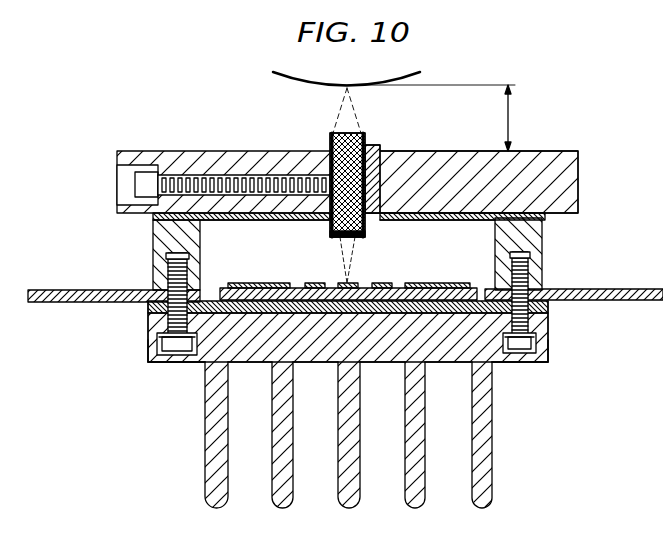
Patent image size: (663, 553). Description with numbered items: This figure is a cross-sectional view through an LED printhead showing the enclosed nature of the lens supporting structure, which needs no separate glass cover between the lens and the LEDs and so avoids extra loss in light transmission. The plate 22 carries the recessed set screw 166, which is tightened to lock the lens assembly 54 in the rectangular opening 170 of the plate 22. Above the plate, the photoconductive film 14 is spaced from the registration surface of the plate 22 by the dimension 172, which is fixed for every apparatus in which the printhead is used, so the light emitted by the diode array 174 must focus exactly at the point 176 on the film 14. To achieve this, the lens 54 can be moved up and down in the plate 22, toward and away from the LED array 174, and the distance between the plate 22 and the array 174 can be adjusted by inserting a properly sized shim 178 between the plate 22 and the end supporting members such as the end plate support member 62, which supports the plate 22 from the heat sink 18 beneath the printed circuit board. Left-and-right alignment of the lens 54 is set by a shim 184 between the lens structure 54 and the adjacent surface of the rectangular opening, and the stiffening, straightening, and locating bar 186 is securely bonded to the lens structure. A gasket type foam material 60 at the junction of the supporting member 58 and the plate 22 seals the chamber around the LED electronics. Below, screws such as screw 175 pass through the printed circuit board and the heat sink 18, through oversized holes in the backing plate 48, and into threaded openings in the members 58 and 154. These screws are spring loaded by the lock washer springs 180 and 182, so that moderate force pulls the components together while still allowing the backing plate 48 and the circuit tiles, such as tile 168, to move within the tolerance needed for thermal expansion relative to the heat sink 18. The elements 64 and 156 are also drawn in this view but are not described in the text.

The photoconductive film 14 is at (386, 75).
The heat sink 18 is at (494, 458).
The plate 22 is at (570, 182).
The backing plate 48 is at (316, 305).
The lens assembly 54 is at (362, 131).
The supporting member 58 is at (535, 262).
The gasket type foam material 60 is at (542, 232).
The end plate support member 62 is at (200, 246).
The base corner 64 is at (205, 362).
The supporting member 154 is at (162, 270).
The thin layer 156 is at (150, 217).
The recessed set screw 166 is at (140, 184).
The circuit tile 168 is at (398, 288).
The rectangular opening 170 is at (327, 150).
The dimension 172 is at (510, 120).
The diode array 174 is at (347, 282).
The screw 175 is at (520, 357).
The focal point 176 is at (345, 90).
The shim 178 is at (300, 221).
The lock washer spring 180 is at (165, 345).
The lock washer spring 182 is at (533, 335).
The shim 184 is at (390, 180).
The stiffening, straightening, and locating bar 186 is at (372, 147).